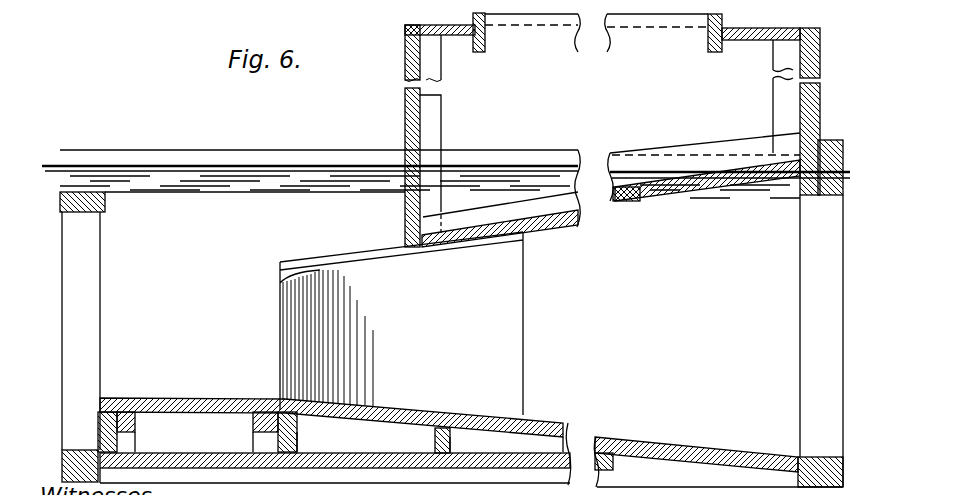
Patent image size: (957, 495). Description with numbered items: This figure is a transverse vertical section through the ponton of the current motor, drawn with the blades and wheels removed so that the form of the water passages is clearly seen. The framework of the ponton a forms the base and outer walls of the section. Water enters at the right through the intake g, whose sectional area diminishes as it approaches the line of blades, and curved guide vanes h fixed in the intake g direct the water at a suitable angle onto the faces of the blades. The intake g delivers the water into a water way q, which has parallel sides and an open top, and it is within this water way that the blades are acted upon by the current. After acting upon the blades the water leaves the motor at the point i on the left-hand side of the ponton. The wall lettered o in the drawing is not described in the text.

The nozzle tube wall o is at (405, 104).
The outlet point i is at (75, 324).
The water way q is at (330, 332).
The guide vane h is at (401, 323).
The intake g is at (718, 341).
The framework of the ponton a is at (316, 454).